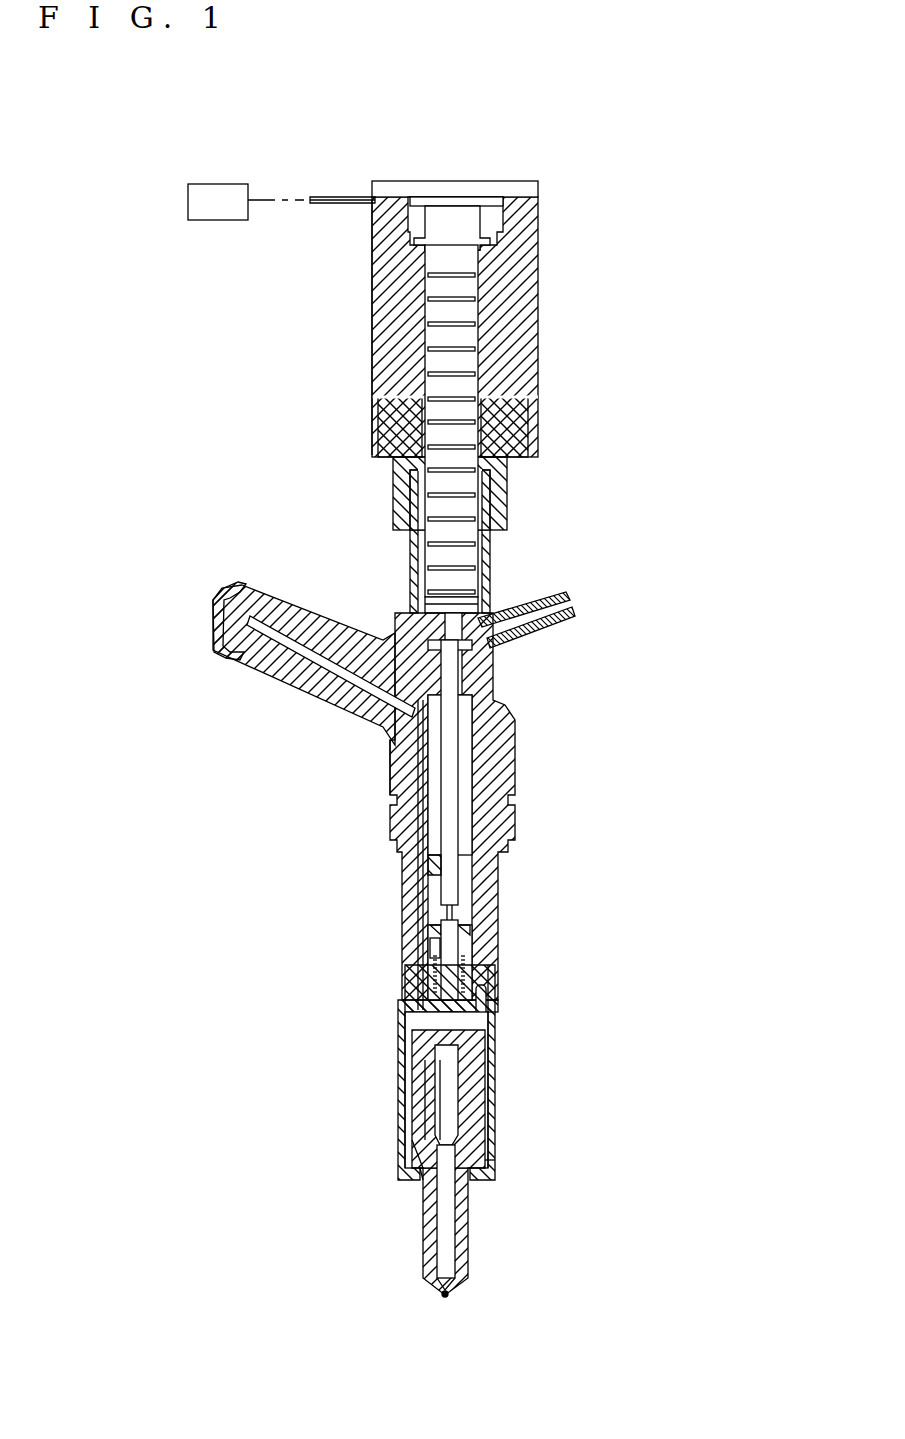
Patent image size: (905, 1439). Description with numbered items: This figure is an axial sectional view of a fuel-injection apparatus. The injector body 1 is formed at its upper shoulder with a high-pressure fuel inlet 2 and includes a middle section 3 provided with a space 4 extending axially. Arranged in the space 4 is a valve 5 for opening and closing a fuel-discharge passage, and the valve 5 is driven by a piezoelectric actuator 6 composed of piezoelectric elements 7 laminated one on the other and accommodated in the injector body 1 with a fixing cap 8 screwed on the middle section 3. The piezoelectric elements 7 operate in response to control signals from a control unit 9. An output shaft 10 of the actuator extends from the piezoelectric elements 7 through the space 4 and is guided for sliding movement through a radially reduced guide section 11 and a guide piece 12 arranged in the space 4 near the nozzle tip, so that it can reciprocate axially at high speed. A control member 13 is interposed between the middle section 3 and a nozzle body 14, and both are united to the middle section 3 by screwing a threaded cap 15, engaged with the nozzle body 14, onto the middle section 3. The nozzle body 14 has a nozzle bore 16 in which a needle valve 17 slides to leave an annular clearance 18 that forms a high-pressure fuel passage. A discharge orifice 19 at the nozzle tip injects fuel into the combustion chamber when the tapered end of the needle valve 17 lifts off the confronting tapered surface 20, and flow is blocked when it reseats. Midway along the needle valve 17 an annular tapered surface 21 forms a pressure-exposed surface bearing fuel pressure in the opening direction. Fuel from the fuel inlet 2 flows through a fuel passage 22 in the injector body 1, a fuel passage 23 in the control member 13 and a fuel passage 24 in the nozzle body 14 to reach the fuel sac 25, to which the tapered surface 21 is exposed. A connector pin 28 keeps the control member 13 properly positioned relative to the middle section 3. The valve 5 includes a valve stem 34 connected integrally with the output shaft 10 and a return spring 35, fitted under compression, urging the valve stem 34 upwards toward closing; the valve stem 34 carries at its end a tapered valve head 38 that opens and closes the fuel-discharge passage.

The injector body 1 is at (530, 718).
The high-pressure fuel inlet 2 is at (330, 640).
The middle section 3 is at (490, 793).
The space 4 is at (455, 760).
The valve 5 is at (470, 955).
The piezoelectric actuator 6 is at (545, 310).
The piezoelectric elements 7 is at (455, 553).
The fixing cap 8 is at (390, 343).
The control unit 9 is at (218, 198).
The output shaft 10 is at (452, 830).
The guide section 11 is at (480, 668).
The guide piece 12 is at (430, 870).
The control member 13 is at (480, 1040).
The nozzle body 14 is at (475, 1130).
The threaded cap 15 is at (490, 1158).
The nozzle bore 16 is at (455, 1088).
The needle valve 17 is at (443, 1120).
The annular clearance 18 is at (455, 1225).
The discharge orifice 19 is at (447, 1296).
The tapered surface 20 is at (437, 1275).
The annular tapered surface 21 is at (420, 1180).
The fuel passage 22 is at (412, 778).
The fuel passage 23 is at (418, 1040).
The fuel passage 24 is at (425, 1090).
The fuel sac 25 is at (415, 1145).
The connector pin 28 is at (490, 1008).
The valve stem 34 is at (435, 947).
The return spring 35 is at (435, 975).
The tapered valve head 38 is at (420, 1012).